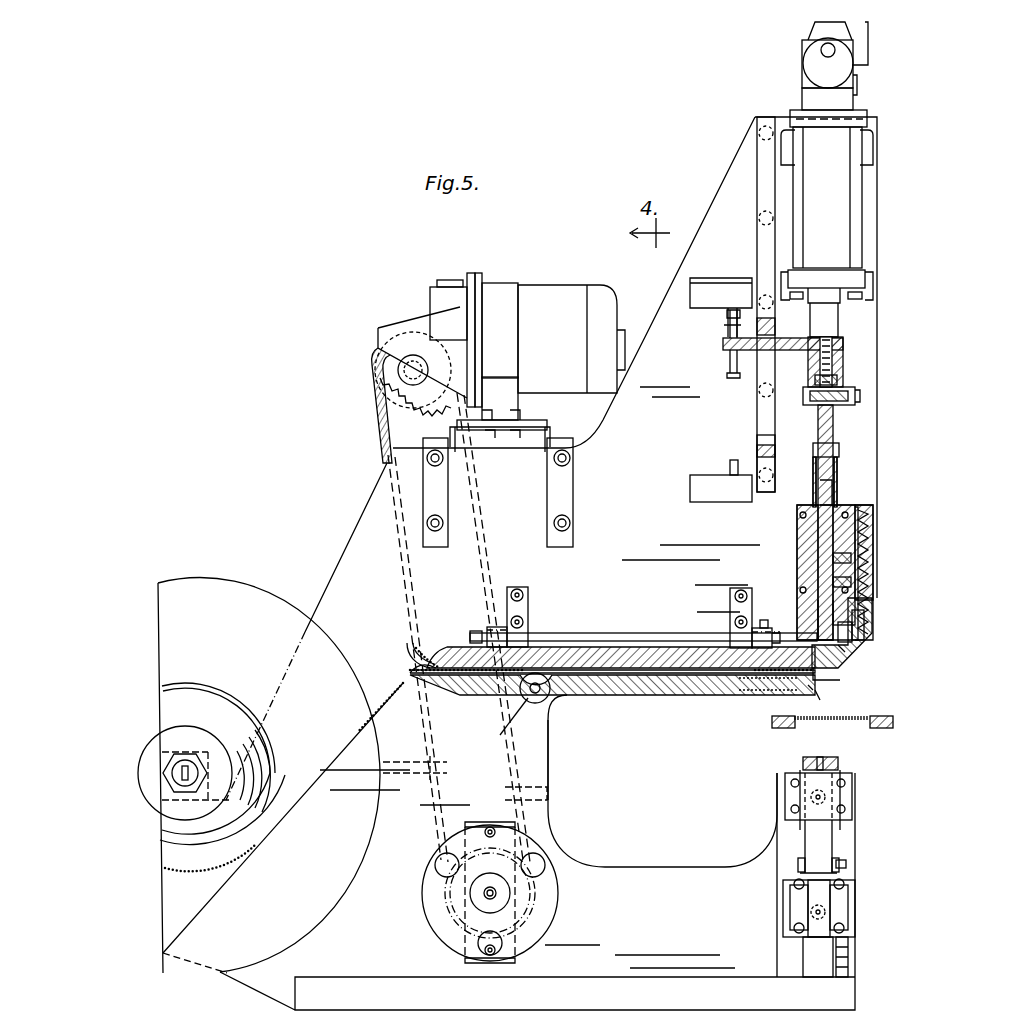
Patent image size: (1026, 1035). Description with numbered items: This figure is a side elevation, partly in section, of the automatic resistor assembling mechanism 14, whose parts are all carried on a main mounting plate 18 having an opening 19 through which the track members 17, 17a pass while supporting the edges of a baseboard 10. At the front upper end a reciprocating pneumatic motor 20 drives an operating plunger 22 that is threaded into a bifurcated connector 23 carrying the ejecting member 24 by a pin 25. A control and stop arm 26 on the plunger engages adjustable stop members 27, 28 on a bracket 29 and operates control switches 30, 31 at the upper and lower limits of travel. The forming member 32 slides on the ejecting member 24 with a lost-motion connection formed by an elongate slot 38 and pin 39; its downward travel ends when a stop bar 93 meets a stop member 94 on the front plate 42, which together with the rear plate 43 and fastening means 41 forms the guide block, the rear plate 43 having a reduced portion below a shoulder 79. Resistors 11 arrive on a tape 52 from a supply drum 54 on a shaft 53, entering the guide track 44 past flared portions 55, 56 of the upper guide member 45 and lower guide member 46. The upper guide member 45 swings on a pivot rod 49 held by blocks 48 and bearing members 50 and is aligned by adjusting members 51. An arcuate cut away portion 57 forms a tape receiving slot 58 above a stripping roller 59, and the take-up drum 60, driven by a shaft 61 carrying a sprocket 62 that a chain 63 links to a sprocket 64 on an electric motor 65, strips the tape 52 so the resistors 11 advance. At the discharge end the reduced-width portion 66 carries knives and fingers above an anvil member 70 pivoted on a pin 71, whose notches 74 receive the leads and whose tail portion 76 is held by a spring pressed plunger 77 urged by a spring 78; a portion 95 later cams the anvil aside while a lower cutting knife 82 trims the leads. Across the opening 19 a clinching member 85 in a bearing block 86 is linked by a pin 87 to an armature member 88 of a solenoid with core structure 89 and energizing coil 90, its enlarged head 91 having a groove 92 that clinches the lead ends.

The baseboard 10 is at (855, 712).
The resistors 11 is at (353, 733).
The automatic resistor assembling mechanism 14 is at (930, 332).
The track member 17 is at (780, 728).
The track member 17a is at (893, 722).
The main mounting plate 18 is at (862, 318).
The opening 19 is at (838, 745).
The reciprocating pneumatic motor 20 is at (840, 185).
The operating plunger 22 is at (845, 353).
The bifurcated connector 23 is at (845, 376).
The ejecting member 24 is at (835, 428).
The pin 25 is at (858, 398).
The control and stop arm 26 is at (725, 344).
The adjustable stop member 27 is at (768, 328).
The adjustable stop member 28 is at (763, 450).
The bracket 29 is at (763, 180).
The control switch 30 is at (714, 296).
The control switch 31 is at (710, 478).
The forming member 32 is at (816, 468).
The elongate slot 38 is at (835, 477).
The pin 39 is at (840, 456).
The fastening means 41 is at (803, 513).
The front plate 42 is at (862, 520).
The rear plate 43 is at (803, 529).
The guide track 44 is at (662, 676).
The upper guide member 45 is at (571, 652).
The lower guide member 46 is at (596, 695).
The blocks 48 is at (548, 578).
The pivot rod 49 is at (620, 636).
The bearing members 50 is at (487, 634).
The adjusting members 51 is at (542, 640).
The tape 52 is at (375, 760).
The shaft 53 is at (192, 768).
The supply drum 54 is at (232, 594).
The flared portion 55 is at (425, 650).
The flared portion 56 is at (430, 670).
The arcuate cut away portion 57 is at (567, 698).
The tape receiving slot 58 is at (522, 690).
The stripping roller 59 is at (500, 718).
The take-up drum 60 is at (548, 895).
The shaft 61 is at (495, 895).
The sprocket 62 is at (435, 918).
The chain 63 is at (383, 440).
The sprocket 64 is at (390, 385).
The electric motor 65 is at (553, 300).
The portion of reduced width 66 is at (798, 626).
The anvil member 70 is at (843, 670).
The pin 71 is at (866, 634).
The notches 74 is at (820, 699).
The tail or cam portion 76 is at (856, 656).
The spring pressed plunger 77 is at (866, 614).
The spring 78 is at (870, 547).
The shoulder 79 is at (805, 605).
The lower cutting knife 82 is at (805, 700).
The clinching member 85 is at (812, 838).
The bearing block 86 is at (795, 797).
The pin 87 is at (845, 864).
The armature member 88 is at (808, 976).
The core structure 89 is at (790, 913).
The energizing coil 90 is at (795, 918).
The enlarged head 91 is at (840, 765).
The groove 92 is at (820, 757).
The stop bar 93 is at (838, 500).
The stop member 94 is at (835, 558).
The portion 95 is at (830, 581).